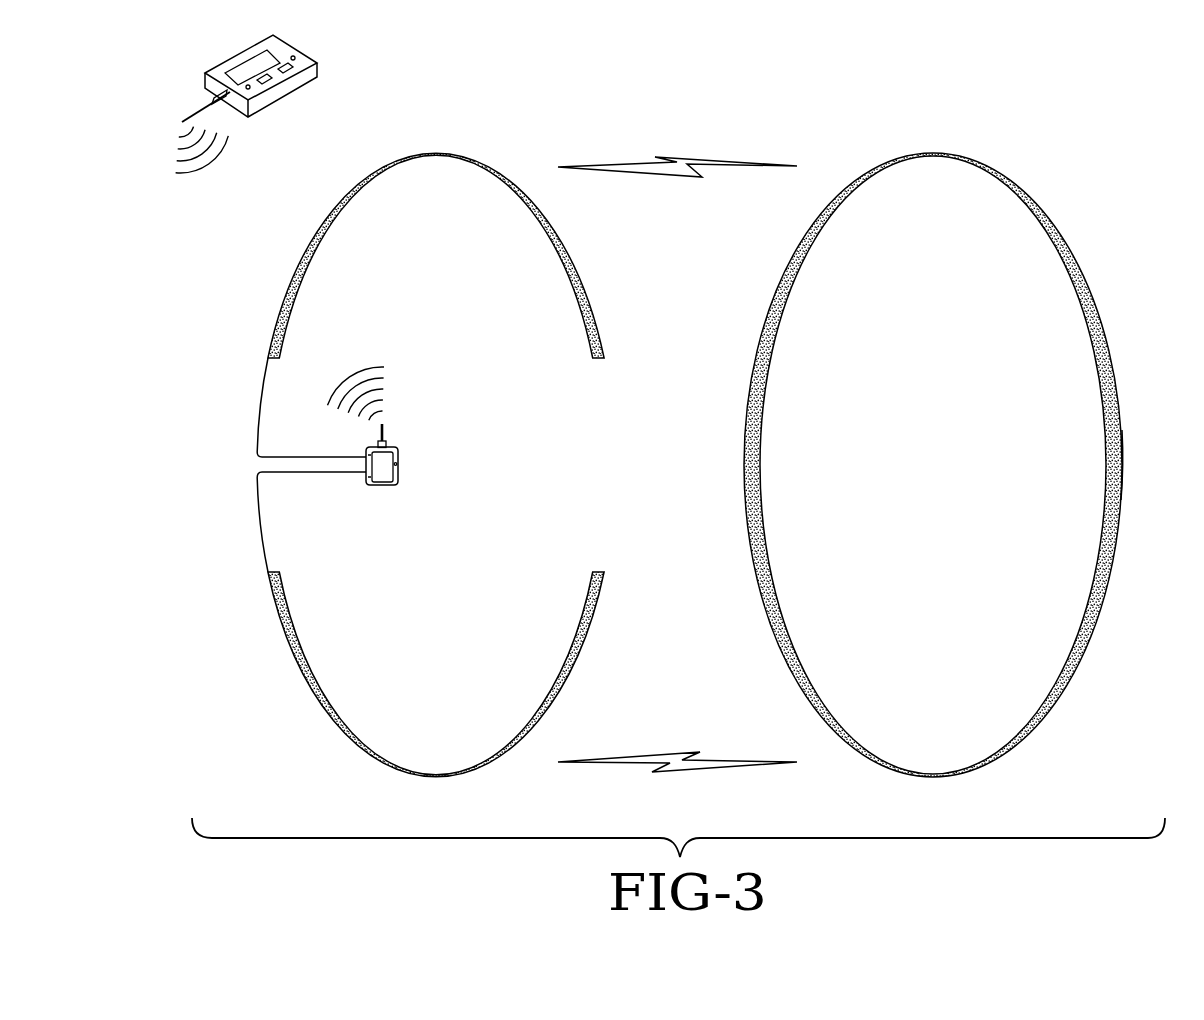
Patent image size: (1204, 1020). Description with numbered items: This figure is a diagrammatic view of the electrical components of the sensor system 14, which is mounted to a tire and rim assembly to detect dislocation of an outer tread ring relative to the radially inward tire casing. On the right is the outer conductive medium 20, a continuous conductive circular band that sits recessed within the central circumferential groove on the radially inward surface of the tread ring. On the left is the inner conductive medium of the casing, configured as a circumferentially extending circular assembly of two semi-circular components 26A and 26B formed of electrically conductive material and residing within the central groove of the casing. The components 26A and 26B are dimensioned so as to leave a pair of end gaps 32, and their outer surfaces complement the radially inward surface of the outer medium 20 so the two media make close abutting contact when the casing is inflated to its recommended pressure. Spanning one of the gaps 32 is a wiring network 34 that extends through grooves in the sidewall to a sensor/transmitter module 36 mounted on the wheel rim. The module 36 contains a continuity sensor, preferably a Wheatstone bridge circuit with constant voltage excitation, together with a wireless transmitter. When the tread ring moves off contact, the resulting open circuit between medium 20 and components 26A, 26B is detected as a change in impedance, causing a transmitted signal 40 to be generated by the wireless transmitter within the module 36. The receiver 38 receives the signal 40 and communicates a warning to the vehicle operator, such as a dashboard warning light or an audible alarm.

The sensor system 14 is at (1090, 197).
The outer conductive medium 20 is at (1123, 461).
The semi-circular component 26A is at (298, 683).
The semi-circular component 26B is at (397, 160).
The end gap 32 is at (612, 466).
The wiring network 34 is at (315, 472).
The sensor/transmitter module 36 is at (380, 473).
The receiver 38 is at (295, 44).
The transmitted signal 40 is at (350, 375).